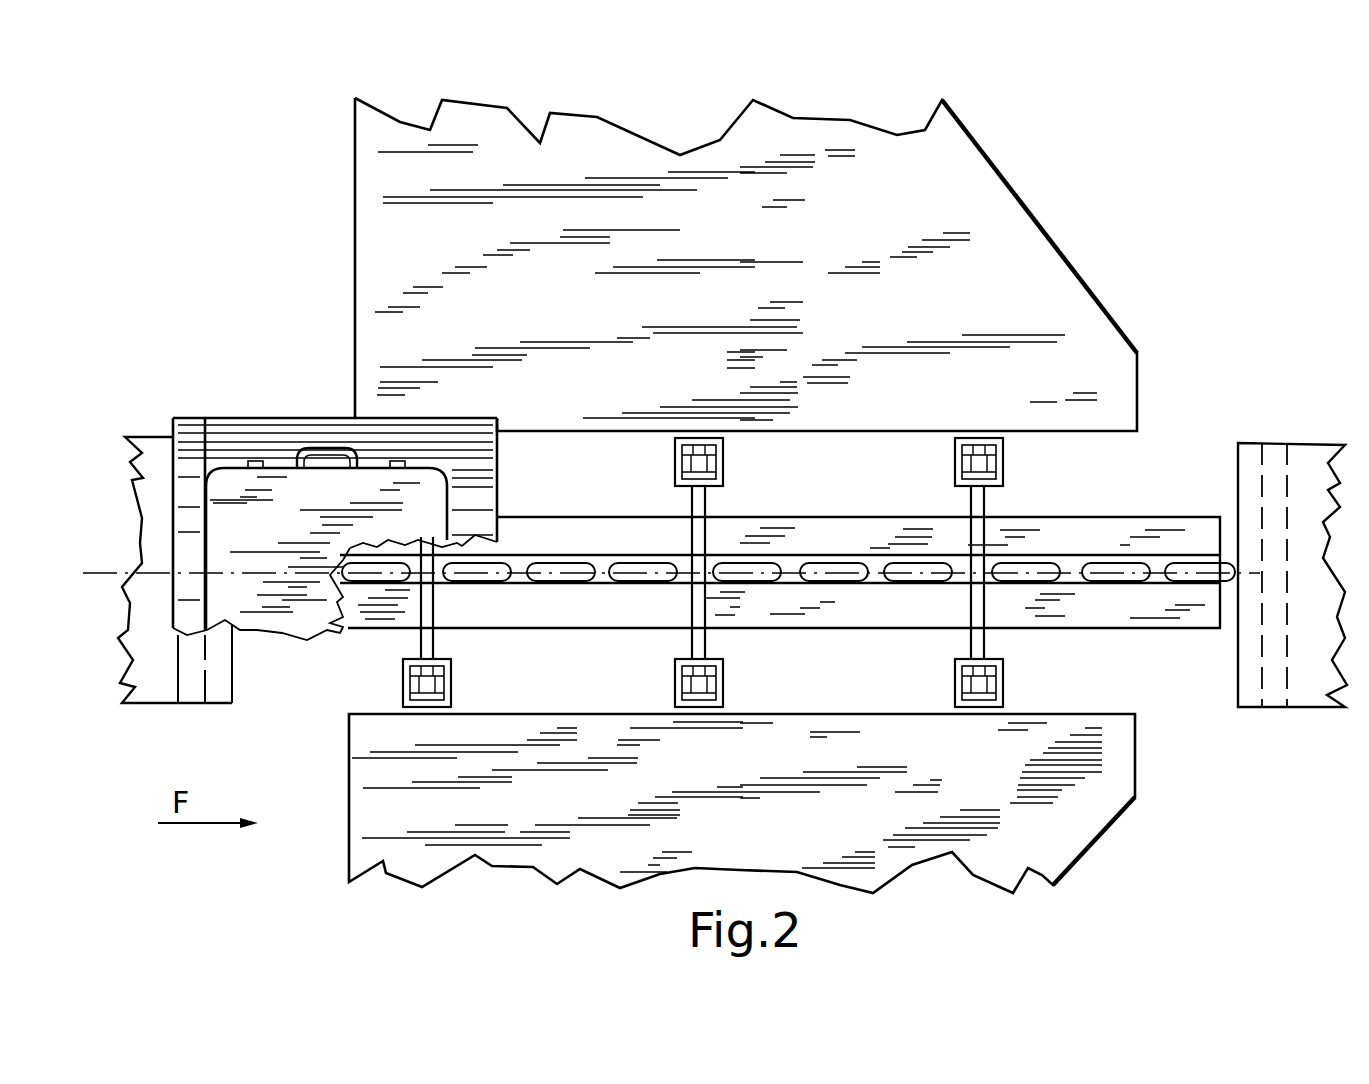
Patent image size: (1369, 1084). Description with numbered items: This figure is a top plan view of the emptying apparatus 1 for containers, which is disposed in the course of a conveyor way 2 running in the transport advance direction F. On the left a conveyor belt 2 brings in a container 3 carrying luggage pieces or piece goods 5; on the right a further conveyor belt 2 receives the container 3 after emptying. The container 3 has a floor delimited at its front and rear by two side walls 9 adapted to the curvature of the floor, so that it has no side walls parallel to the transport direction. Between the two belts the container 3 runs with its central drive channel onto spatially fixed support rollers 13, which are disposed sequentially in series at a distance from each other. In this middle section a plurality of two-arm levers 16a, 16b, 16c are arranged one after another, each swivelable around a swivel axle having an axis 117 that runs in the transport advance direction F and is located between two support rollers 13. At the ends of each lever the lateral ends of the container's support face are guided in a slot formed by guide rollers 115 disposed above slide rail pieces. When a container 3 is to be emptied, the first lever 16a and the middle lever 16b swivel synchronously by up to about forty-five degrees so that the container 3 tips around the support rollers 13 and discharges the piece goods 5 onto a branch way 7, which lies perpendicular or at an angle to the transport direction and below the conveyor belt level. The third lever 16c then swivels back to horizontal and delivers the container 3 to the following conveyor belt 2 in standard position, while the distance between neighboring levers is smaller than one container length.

The emptying apparatus 1 is at (322, 360).
The conveyor way 2 is at (152, 447).
The container 3 is at (307, 428).
The piece goods 5 is at (223, 480).
The branch way 7 is at (1005, 280).
The side wall 9 is at (172, 435).
The support roller 13 is at (1040, 570).
The two-arm lever 16a is at (434, 636).
The two-arm lever 16b is at (697, 508).
The two-arm lever 16c is at (985, 508).
The guide roller 115 is at (957, 462).
The axis 117 is at (655, 568).